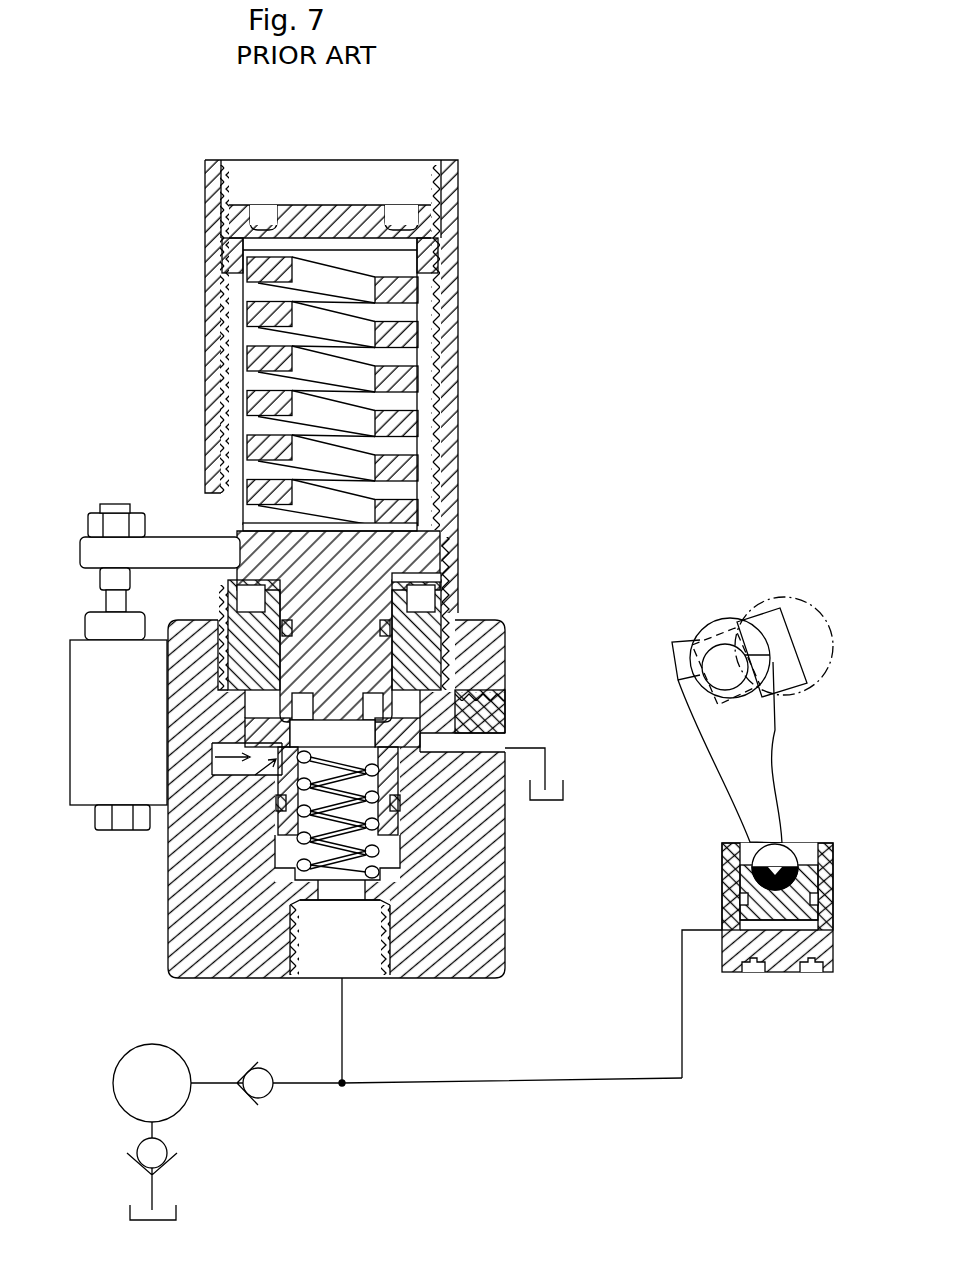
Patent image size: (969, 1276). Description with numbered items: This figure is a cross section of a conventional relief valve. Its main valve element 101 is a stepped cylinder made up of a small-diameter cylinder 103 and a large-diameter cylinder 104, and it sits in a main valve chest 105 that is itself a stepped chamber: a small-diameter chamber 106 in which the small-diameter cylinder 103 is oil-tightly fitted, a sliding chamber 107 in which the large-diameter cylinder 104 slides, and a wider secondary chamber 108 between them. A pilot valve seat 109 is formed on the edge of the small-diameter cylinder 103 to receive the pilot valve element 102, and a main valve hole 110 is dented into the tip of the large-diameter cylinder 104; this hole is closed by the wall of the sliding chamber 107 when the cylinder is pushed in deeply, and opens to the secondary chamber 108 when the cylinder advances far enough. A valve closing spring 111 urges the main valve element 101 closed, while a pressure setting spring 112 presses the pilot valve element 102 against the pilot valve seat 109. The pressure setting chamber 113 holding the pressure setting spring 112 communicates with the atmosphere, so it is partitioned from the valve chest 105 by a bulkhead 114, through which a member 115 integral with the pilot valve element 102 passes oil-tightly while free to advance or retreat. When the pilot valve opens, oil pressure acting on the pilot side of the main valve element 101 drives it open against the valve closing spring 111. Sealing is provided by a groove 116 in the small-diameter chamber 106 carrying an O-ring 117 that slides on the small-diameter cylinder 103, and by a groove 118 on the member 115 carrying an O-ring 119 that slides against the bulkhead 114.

The main valve element 101 is at (200, 835).
The pilot valve element 102 is at (500, 656).
The small-diameter cylinder 103 is at (500, 742).
The large-diameter cylinder 104 is at (500, 722).
The main valve chest 105 is at (262, 762).
The small-diameter chamber 106 is at (400, 855).
The sliding chamber 107 is at (500, 692).
The secondary chamber 108 is at (282, 727).
The pilot valve seat 109 is at (322, 858).
The main valve hole 110 is at (250, 712).
The valve closing spring 111 is at (352, 862).
The pressure setting spring 112 is at (262, 358).
The pressure setting chamber 113 is at (432, 352).
The bulkhead 114 is at (415, 625).
The member 115 is at (342, 640).
The groove 116 is at (290, 862).
The O-ring 117 is at (400, 803).
The groove 118 is at (282, 628).
The O-ring 119 is at (452, 600).